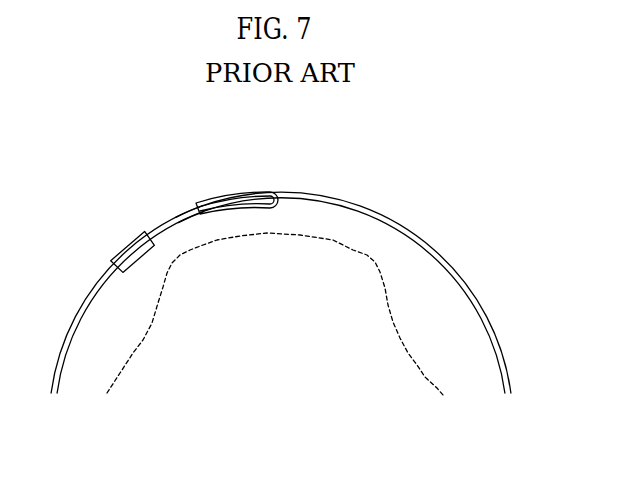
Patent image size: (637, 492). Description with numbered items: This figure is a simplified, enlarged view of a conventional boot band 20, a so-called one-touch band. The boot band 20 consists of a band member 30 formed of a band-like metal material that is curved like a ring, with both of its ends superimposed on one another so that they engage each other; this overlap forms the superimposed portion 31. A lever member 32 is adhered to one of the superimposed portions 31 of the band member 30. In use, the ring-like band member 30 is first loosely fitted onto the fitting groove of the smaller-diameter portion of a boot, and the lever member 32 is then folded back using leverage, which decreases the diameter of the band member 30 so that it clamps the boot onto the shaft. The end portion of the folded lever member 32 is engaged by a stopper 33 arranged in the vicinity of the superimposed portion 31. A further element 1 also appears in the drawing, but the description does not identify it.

The head of wearer 1 is at (438, 299).
The boot band 20 is at (353, 197).
The band member 30 is at (380, 213).
The superimposed portion 31 is at (222, 196).
The lever member 32 is at (176, 219).
The stopper 33 is at (128, 254).